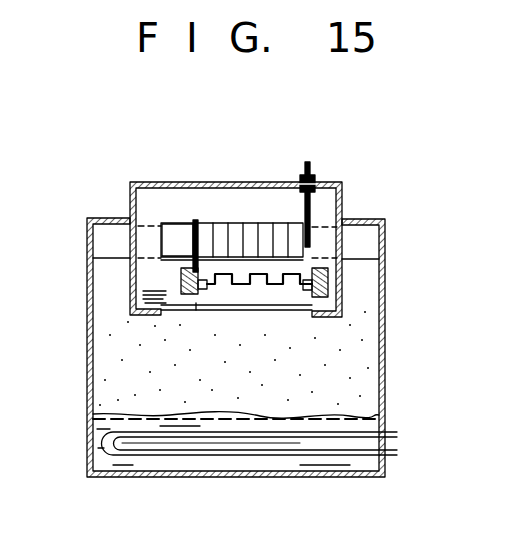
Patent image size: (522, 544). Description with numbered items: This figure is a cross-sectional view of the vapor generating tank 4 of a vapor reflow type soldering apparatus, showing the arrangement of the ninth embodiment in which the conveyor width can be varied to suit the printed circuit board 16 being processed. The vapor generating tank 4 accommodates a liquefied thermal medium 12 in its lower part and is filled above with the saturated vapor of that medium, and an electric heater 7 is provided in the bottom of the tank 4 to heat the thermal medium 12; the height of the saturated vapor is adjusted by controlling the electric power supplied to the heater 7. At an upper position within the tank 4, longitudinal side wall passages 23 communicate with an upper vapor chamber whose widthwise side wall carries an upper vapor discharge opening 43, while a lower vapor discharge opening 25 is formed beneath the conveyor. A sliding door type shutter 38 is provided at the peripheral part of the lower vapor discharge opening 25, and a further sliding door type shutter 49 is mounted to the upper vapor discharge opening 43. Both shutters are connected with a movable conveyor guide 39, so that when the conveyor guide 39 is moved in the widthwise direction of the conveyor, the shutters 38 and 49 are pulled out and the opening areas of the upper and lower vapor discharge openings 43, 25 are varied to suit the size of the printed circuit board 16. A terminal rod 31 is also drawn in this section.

The vapor generating tank 4 is at (88, 240).
The electric heater 7 is at (395, 435).
The liquefied thermal medium 12 is at (103, 458).
The printed circuit board 16 is at (278, 273).
The longitudinal side wall passage 23 is at (363, 292).
The lower vapor discharge opening 25 is at (283, 309).
The terminal rod 31 is at (312, 202).
The sliding door type shutter 38 is at (181, 315).
The movable conveyor guide 39 is at (181, 282).
The upper vapor discharge opening 43 is at (208, 225).
The sliding door type shutter 49 is at (180, 230).